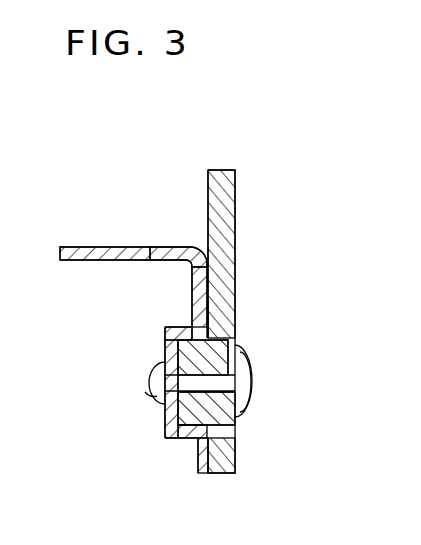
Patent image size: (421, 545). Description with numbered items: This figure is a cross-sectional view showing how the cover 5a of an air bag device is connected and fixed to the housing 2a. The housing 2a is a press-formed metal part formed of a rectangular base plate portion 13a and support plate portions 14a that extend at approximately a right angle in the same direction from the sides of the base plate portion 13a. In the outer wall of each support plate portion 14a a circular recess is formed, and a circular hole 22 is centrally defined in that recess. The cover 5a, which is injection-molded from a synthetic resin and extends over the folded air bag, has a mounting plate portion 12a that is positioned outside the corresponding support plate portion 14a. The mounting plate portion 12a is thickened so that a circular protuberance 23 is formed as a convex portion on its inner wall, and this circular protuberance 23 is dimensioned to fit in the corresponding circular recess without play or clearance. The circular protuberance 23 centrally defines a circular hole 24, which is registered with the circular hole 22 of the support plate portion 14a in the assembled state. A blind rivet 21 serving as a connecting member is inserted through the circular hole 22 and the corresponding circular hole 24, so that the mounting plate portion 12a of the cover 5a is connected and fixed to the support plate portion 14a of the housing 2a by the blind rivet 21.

The housing 2a is at (89, 240).
The cover 5a is at (246, 187).
The mounting plate portion 12a is at (238, 327).
The base plate portion 13a is at (131, 333).
The support plate portion 14a is at (195, 283).
The blind rivet 21 is at (252, 378).
The circular hole 22 is at (139, 380).
The circular protuberance 23 is at (167, 440).
The circular hole 24 is at (170, 357).